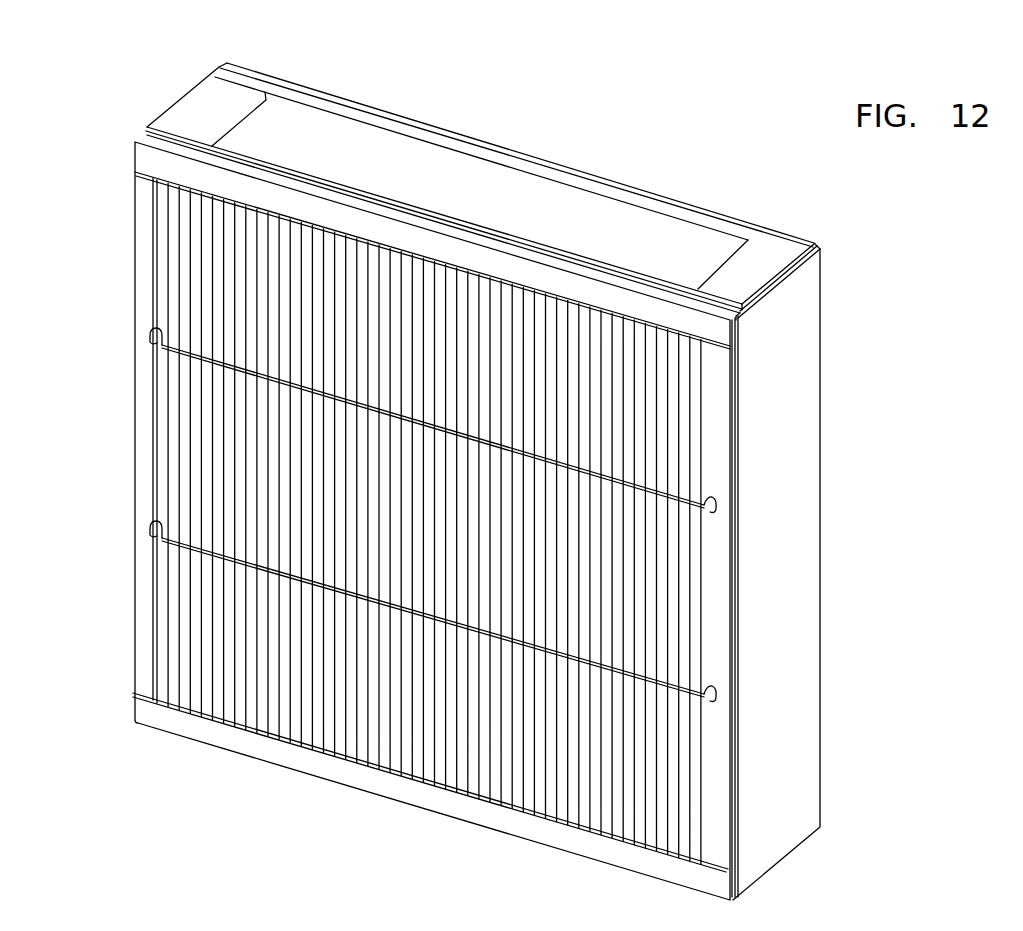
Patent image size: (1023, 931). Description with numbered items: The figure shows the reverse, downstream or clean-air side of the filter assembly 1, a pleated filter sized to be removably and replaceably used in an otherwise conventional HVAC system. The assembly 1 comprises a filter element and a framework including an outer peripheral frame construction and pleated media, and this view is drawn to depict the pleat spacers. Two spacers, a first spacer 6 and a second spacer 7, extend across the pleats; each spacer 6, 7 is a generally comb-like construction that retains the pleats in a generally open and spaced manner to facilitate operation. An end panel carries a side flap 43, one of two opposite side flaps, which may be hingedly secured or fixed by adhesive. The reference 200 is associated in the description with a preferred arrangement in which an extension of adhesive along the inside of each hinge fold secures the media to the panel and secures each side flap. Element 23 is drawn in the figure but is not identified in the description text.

The filter assembly 1 is at (857, 232).
The frame 23 is at (147, 216).
The side flap 43 is at (720, 373).
The first spacer 6 is at (660, 495).
The second spacer 7 is at (562, 655).
The preferred arrangement 200 is at (155, 330).